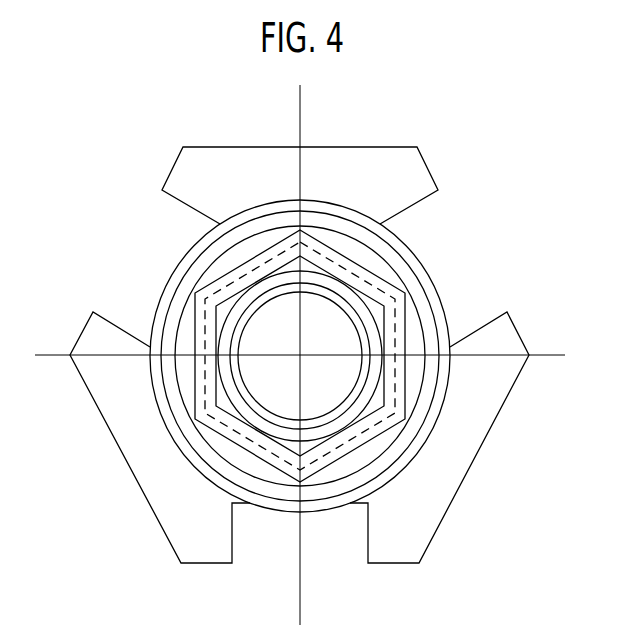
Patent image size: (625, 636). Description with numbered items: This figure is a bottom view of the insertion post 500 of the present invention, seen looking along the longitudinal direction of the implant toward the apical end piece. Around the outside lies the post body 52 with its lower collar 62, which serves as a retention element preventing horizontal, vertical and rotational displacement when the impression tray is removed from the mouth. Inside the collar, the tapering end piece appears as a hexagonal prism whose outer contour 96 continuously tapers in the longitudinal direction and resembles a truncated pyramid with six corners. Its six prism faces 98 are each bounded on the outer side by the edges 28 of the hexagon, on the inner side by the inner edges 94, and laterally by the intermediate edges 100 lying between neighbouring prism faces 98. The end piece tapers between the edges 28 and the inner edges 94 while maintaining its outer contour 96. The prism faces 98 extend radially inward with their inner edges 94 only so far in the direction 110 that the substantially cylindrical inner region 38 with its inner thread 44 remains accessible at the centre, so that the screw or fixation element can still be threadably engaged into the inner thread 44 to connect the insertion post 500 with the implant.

The insertion post 500 is at (407, 141).
The edges 28 is at (196, 312).
The inner region 38 is at (277, 383).
The inner thread 44 is at (397, 377).
The post body 52 is at (267, 512).
The lower collar 62 is at (473, 462).
The inner edges 94 is at (203, 295).
The outer contour 96 is at (418, 300).
The prism faces 98 is at (243, 273).
The intermediate edges 100 is at (185, 405).
The direction 110 is at (316, 417).